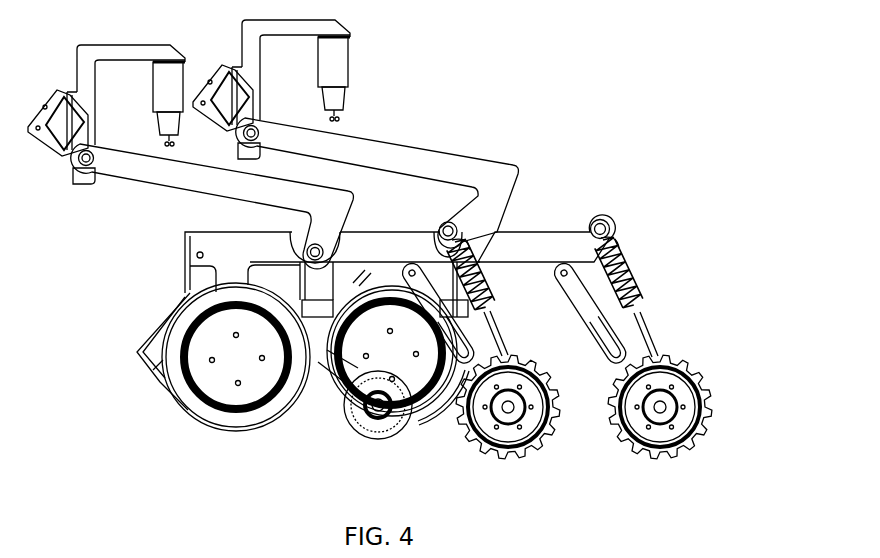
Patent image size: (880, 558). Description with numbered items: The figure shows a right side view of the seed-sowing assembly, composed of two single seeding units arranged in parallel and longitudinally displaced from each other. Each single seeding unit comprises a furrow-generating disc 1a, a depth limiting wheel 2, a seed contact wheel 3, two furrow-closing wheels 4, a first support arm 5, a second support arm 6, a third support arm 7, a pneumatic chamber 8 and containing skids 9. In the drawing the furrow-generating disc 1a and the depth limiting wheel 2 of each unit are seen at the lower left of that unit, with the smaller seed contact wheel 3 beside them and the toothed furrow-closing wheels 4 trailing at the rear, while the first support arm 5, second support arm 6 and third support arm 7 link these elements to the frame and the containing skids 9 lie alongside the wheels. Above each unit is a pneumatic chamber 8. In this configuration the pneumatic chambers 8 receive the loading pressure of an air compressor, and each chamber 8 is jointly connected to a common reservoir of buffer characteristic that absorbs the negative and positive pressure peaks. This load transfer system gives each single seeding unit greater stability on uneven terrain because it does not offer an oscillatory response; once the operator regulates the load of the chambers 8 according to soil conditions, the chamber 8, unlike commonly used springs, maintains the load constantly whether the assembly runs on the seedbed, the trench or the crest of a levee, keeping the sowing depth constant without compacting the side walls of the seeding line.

The furrow-generating disc 1a is at (188, 410).
The depth limiting wheel 2 is at (224, 395).
The seed contact wheel 3 is at (356, 428).
The furrow-closing wheels 4 is at (528, 420).
The first support arm 5 is at (138, 170).
The second support arm 6 is at (250, 245).
The third support arm 7 is at (587, 298).
The pneumatic chamber 8 is at (185, 80).
The containing skids 9 is at (152, 373).